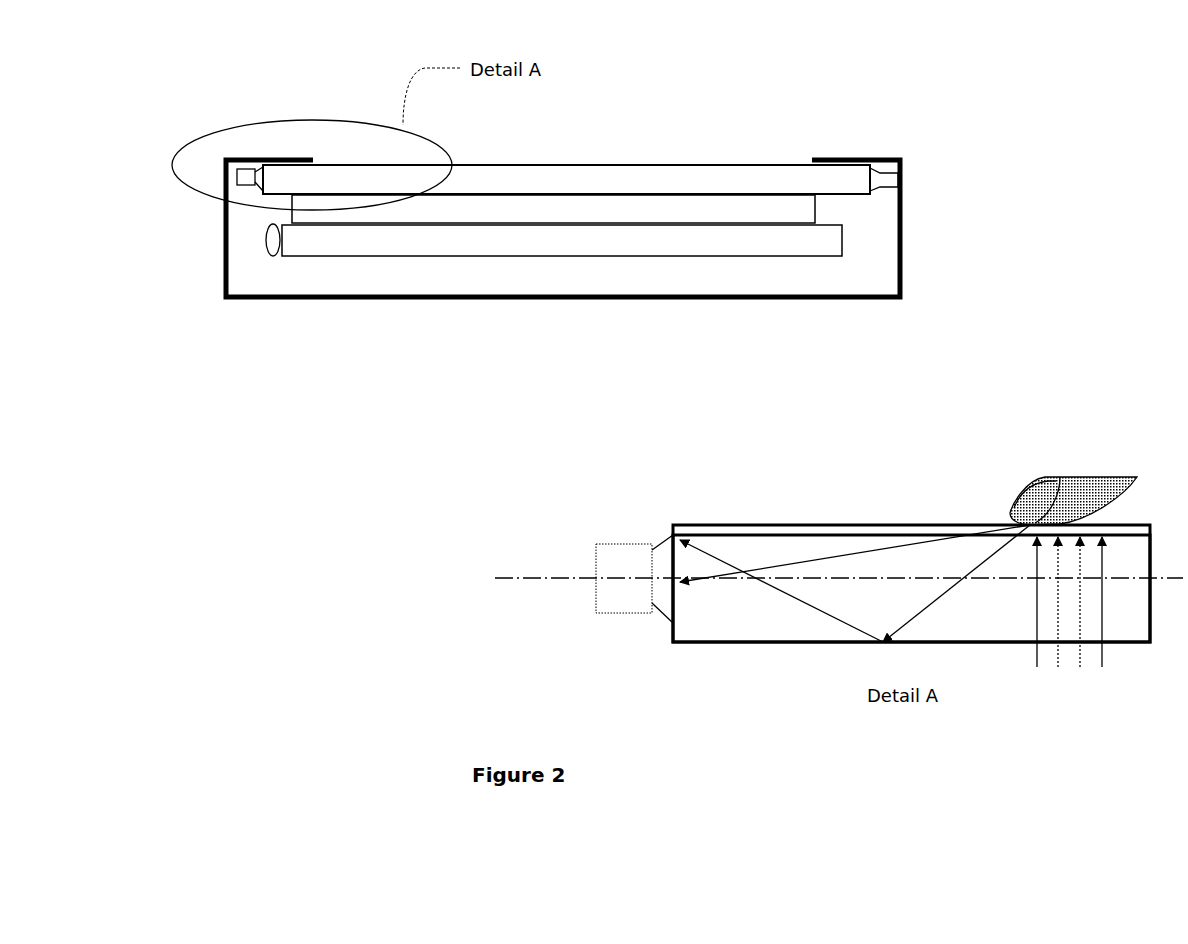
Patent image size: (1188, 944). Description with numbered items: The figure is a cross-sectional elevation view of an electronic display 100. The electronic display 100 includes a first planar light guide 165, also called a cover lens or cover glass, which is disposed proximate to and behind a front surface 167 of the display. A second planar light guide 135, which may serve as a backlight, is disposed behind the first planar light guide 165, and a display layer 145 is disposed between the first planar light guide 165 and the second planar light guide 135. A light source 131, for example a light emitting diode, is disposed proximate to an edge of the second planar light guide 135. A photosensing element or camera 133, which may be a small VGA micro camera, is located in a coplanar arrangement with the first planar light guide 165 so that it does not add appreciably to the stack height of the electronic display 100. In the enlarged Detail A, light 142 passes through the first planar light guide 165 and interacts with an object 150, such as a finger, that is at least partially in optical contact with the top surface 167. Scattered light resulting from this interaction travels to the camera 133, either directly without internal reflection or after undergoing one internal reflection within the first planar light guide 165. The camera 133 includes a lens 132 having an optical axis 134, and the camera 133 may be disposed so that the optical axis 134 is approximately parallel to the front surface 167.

The electronic display 100 is at (203, 58).
The light source 131 is at (265, 240).
The lens 132 is at (660, 537).
The photosensing element 133 is at (237, 182).
The optical axis 134 is at (517, 582).
The second planar light guide 135 is at (845, 231).
The light 142 is at (1037, 672).
The display layer 145 is at (815, 206).
The object 150 is at (1105, 474).
The first planar light guide 165 is at (848, 176).
The front surface 167 is at (672, 160).